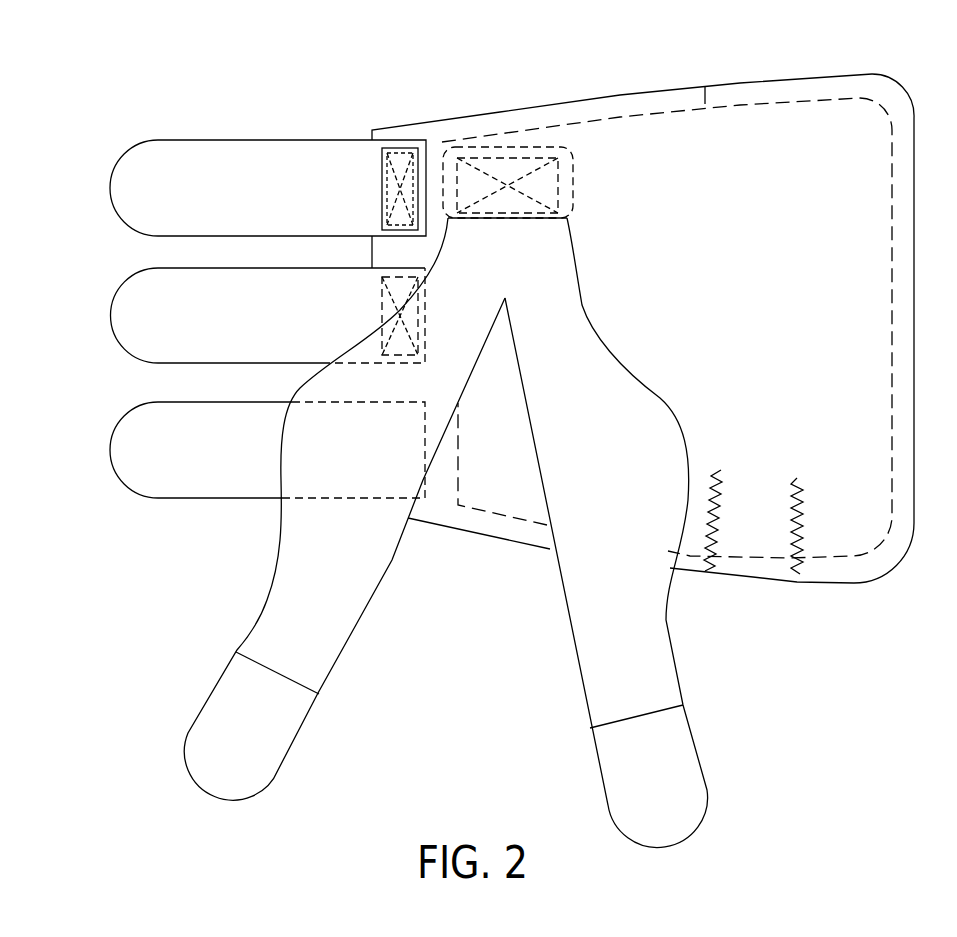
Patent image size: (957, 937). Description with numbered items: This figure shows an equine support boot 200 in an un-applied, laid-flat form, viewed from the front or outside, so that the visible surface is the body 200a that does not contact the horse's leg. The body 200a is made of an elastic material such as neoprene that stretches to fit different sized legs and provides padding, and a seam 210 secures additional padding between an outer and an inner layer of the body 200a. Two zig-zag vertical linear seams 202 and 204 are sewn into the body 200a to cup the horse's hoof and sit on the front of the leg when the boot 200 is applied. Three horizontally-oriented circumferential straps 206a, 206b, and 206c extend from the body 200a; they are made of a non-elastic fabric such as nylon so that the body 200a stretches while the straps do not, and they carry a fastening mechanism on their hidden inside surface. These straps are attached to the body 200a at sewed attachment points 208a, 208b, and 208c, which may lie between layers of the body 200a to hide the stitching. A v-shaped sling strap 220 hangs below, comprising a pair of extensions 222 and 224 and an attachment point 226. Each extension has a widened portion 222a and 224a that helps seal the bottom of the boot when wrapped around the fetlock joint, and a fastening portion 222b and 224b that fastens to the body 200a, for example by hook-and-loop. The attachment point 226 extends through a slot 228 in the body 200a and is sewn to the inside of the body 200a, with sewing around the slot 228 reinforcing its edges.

The equine boot 200 is at (884, 688).
The body 200a is at (718, 272).
The vertical linear seam 202 is at (798, 578).
The vertical linear seam 204 is at (703, 570).
The horizontally-oriented circumferential strap 206a is at (148, 173).
The horizontally-oriented circumferential strap 206b is at (146, 305).
The horizontally-oriented circumferential strap 206c is at (148, 450).
The sewed attachment point 208a is at (400, 147).
The sewed attachment point 208b is at (418, 283).
The sewed attachment point 208c is at (420, 500).
The seam 210 is at (700, 80).
The v-shaped sling strap 220 is at (478, 726).
The extension 222 is at (682, 676).
The widened portion 222a is at (623, 468).
The fastening portion 222b is at (709, 813).
The extension 224 is at (358, 622).
The widened portion 224a is at (387, 468).
The fastening portion 224b is at (278, 772).
The attachment point 226 is at (497, 137).
The slot 228 is at (528, 218).